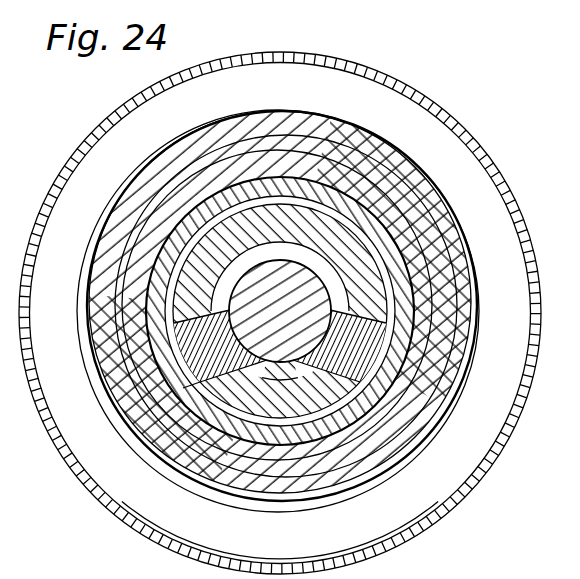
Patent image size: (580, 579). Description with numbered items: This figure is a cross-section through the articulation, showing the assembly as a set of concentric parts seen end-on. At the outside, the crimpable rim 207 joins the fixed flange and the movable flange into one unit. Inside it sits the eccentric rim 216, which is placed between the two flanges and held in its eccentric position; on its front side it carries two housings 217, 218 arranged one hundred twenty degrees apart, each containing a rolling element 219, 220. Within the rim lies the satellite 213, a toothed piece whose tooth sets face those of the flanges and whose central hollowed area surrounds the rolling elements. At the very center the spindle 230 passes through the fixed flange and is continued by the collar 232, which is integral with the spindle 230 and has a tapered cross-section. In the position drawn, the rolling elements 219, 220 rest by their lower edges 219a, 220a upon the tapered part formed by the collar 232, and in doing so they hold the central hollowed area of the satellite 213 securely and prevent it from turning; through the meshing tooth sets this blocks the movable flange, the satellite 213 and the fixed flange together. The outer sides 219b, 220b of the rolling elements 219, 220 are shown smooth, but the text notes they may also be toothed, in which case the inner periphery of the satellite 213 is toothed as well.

The rim 207 is at (489, 166).
The eccentric rim 216 is at (336, 231).
The satellite 213 is at (347, 415).
The housing 217 is at (368, 322).
The spindle 230 is at (313, 289).
The housing 218 is at (174, 323).
The rolling element 219 is at (415, 380).
The lower edge 219a is at (360, 366).
The outer side 219b is at (400, 372).
The rolling element 220 is at (153, 396).
The lower edge 220a is at (199, 381).
The outer side 220b is at (198, 414).
The collar 232 is at (283, 362).